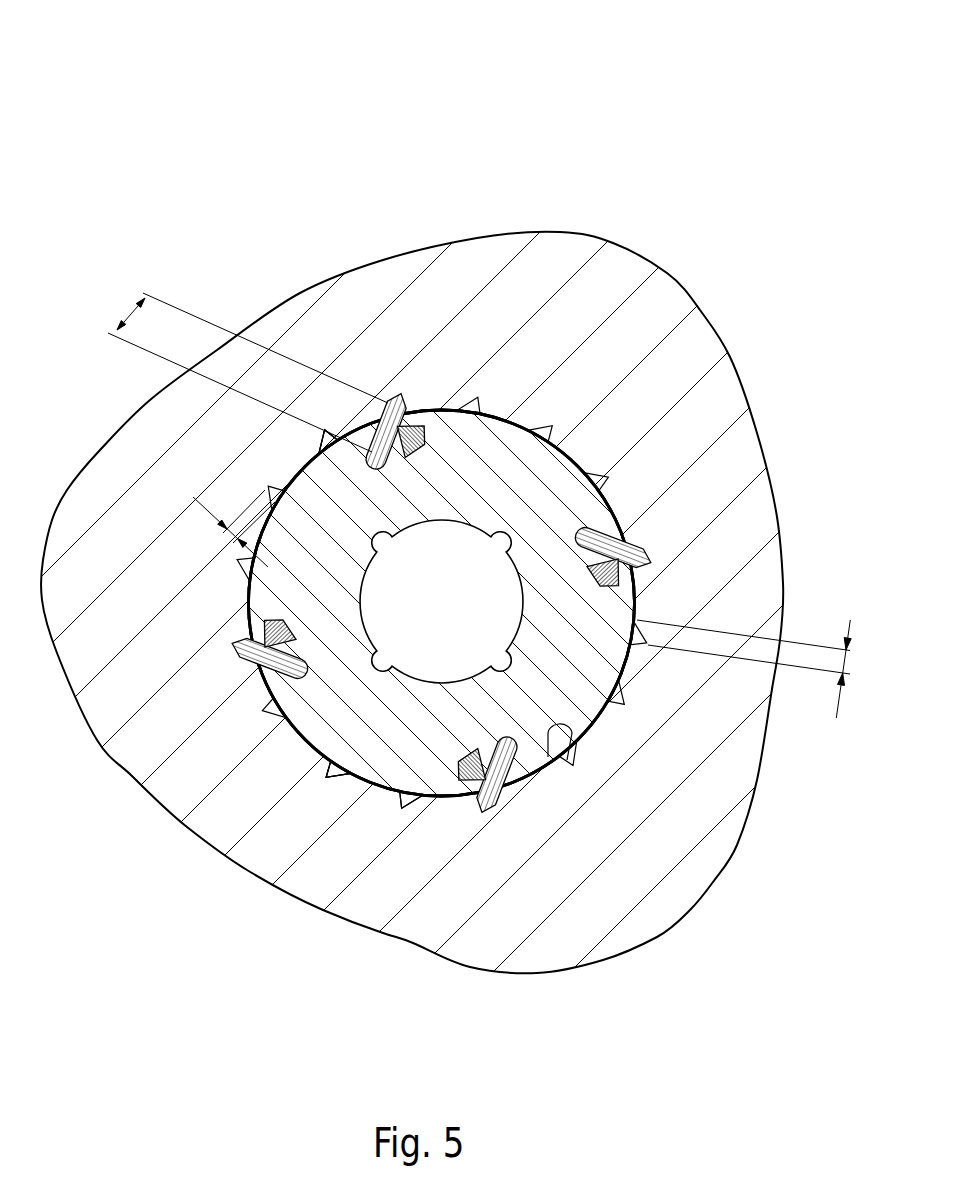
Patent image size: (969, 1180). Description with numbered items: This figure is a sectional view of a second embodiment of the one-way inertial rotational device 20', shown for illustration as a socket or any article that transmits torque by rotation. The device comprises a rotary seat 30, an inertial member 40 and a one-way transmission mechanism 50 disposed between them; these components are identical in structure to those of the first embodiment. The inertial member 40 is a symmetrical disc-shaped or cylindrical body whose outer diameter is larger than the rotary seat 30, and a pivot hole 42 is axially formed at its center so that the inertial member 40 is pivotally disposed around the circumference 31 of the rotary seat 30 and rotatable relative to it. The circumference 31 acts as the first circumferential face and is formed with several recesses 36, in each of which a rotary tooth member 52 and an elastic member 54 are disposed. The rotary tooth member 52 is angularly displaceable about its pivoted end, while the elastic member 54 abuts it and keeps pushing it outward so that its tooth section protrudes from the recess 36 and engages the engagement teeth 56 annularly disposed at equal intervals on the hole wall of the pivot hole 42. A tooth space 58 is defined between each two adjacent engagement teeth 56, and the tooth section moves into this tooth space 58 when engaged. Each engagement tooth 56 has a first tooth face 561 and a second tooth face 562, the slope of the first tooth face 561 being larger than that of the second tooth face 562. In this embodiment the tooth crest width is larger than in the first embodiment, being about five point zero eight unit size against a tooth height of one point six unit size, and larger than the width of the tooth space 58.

The one-way inertial rotational device 20' is at (484, 590).
The rotary seat 30 is at (270, 567).
The circumference 31 is at (556, 765).
The recess 36 is at (378, 432).
The inertial member 40 is at (645, 250).
The pivot hole 42 is at (620, 690).
The one-way transmission mechanism 50 is at (542, 619).
The rotary tooth member 52 is at (382, 437).
The elastic member 54 is at (390, 417).
The engagement tooth 56 is at (417, 437).
The first tooth face 561 is at (385, 795).
The second tooth face 562 is at (355, 785).
The tooth space 58 is at (440, 410).